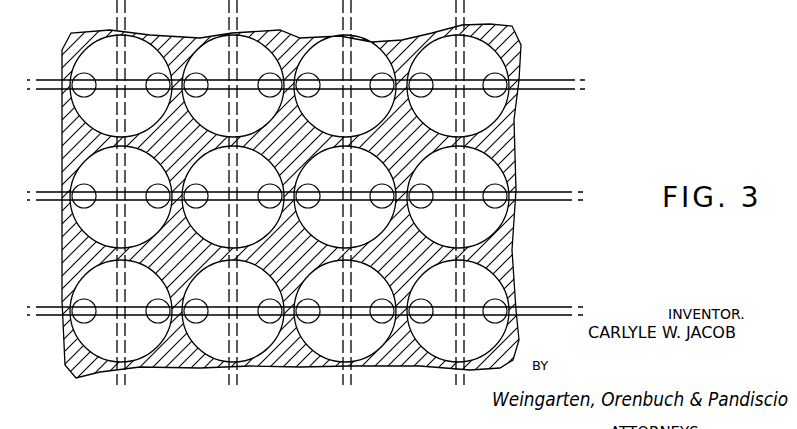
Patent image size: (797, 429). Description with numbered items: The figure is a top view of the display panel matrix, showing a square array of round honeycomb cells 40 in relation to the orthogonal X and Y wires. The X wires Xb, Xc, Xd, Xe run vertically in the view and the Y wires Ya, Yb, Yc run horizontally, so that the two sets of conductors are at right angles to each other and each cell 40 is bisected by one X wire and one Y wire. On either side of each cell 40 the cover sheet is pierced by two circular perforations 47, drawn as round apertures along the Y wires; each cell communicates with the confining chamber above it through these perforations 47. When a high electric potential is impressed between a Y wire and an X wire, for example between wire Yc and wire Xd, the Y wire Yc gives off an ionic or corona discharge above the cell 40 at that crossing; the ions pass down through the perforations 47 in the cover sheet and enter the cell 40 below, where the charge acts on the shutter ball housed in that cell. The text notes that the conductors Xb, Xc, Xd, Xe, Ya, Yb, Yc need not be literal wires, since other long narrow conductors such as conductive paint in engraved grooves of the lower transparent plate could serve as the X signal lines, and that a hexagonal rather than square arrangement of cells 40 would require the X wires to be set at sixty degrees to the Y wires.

The cells 40 is at (80, 126).
The circular perforations 47 is at (382, 74).
The X wire Xb is at (117, 10).
The X wire Xc is at (229, 22).
The X wire Xd is at (343, 13).
The X wire Xe is at (456, 10).
The Y wire Ya is at (547, 80).
The Y wire Yb is at (550, 192).
The Y wire Yc is at (553, 307).